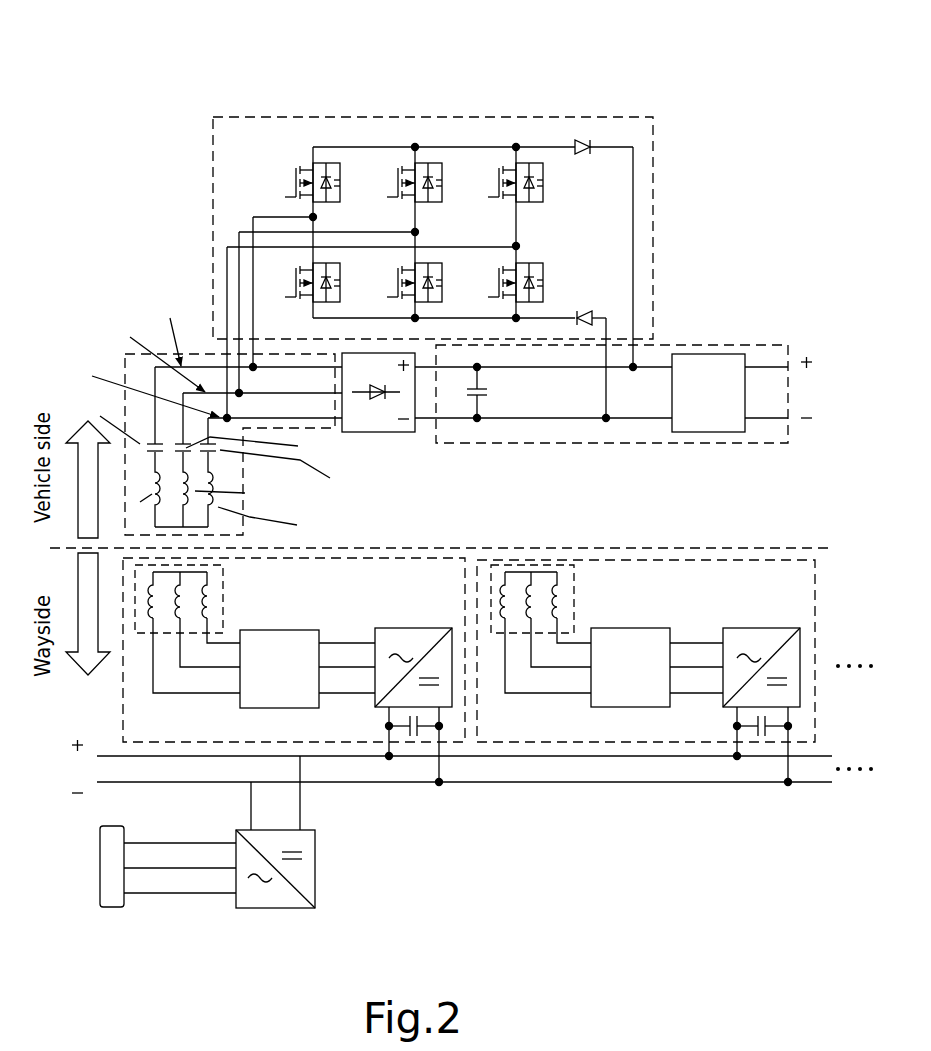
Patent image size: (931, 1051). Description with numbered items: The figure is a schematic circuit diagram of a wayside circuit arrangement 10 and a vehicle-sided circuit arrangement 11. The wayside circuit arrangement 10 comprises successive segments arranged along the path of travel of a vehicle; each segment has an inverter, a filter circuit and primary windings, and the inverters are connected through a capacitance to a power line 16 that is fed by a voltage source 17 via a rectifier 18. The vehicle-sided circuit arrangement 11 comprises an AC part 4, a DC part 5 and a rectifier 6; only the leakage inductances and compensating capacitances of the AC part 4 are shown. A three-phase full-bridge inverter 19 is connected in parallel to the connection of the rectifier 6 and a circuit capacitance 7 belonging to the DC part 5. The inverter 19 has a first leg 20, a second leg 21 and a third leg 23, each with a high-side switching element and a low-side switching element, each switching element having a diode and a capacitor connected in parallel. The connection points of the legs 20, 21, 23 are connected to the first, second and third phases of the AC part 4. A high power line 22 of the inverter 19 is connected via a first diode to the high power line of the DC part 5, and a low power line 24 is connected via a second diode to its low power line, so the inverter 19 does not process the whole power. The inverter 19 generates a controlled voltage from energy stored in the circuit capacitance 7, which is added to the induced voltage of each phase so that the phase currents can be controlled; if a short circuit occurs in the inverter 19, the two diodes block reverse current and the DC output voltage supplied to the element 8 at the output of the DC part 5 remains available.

The AC part 4 is at (243, 474).
The DC part 5 is at (543, 444).
The rectifier 6 is at (390, 433).
The circuit capacitance 7 is at (470, 396).
The load / output converter 8 is at (715, 353).
The wayside circuit arrangement 10 is at (128, 924).
The vehicle-sided circuit arrangement 11 is at (155, 92).
The power line 16 is at (543, 783).
The voltage source 17 is at (115, 826).
The rectifier 18 is at (315, 830).
The three-phase full-bridge inverter 19 is at (591, 117).
The first leg 20 is at (313, 147).
The second leg 21 is at (415, 147).
The high power line 22 is at (633, 147).
The third leg 23 is at (516, 147).
The low power line 24 is at (555, 316).